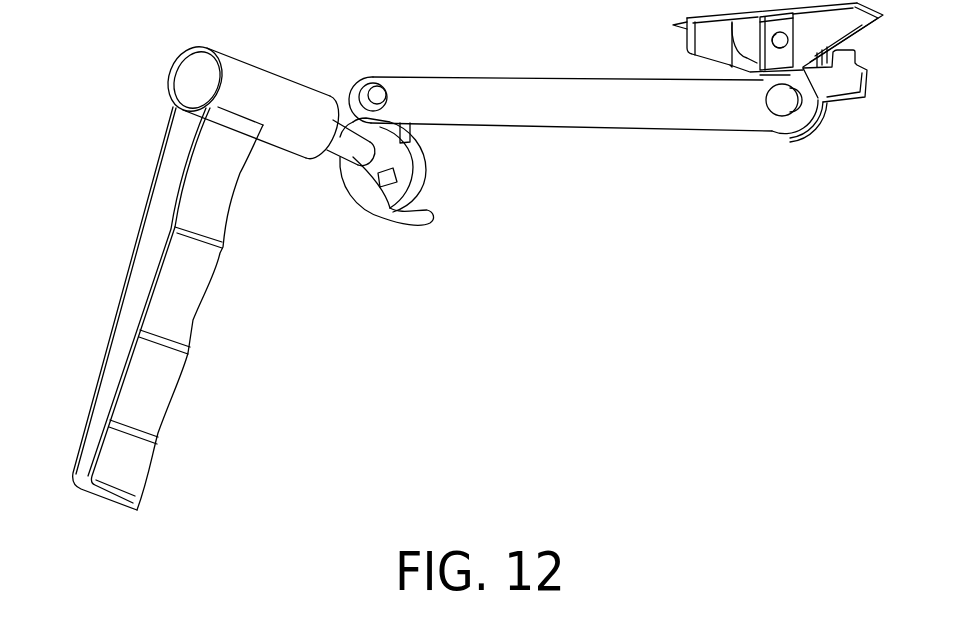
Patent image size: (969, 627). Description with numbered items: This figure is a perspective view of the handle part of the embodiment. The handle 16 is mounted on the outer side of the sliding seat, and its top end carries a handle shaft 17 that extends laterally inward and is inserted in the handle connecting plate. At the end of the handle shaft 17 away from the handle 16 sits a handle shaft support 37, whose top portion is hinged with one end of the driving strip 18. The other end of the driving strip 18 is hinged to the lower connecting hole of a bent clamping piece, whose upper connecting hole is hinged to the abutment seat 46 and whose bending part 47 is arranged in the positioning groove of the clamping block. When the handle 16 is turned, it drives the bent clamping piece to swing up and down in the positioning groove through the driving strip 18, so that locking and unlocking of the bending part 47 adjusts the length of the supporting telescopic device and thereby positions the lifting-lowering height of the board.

The handle 16 is at (186, 290).
The handle shaft 17 is at (346, 132).
The driving strip 18 is at (532, 96).
The handle shaft support 37 is at (404, 163).
The abutment seat 46 is at (808, 38).
The bending part 47 is at (715, 52).